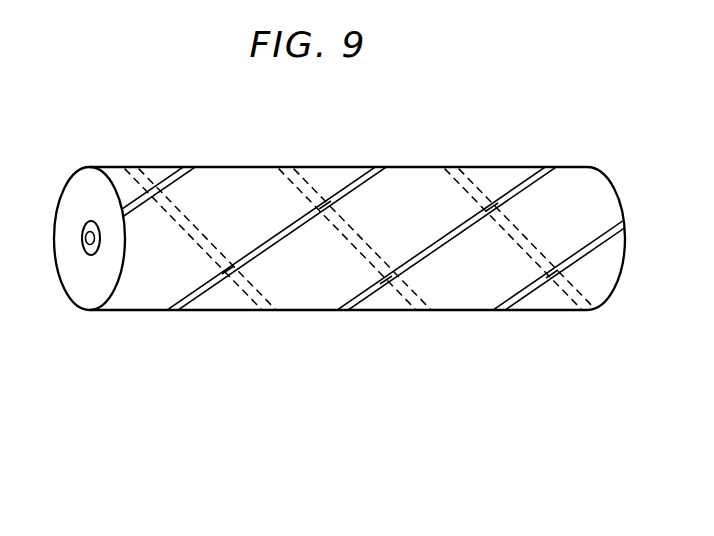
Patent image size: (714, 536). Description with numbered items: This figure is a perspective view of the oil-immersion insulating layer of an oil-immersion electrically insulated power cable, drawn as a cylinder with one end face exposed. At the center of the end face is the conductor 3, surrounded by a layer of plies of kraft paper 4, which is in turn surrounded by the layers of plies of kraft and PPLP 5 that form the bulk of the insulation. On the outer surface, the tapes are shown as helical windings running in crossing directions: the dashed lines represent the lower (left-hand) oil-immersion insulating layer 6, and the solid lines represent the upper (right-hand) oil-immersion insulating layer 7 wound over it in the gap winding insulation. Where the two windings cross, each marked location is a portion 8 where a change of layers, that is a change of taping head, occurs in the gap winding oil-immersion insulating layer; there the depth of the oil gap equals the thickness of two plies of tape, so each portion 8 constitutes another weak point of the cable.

The conductor 3 is at (86, 244).
The layer of plies of kraft paper 4 is at (83, 225).
The layers of plies of kraft and PPLP 5 is at (90, 182).
The lower oil-immersion insulating layer 6 is at (178, 210).
The upper oil-immersion insulating layer 7 is at (301, 217).
The portion where a change of layers occurs 8 is at (324, 203).